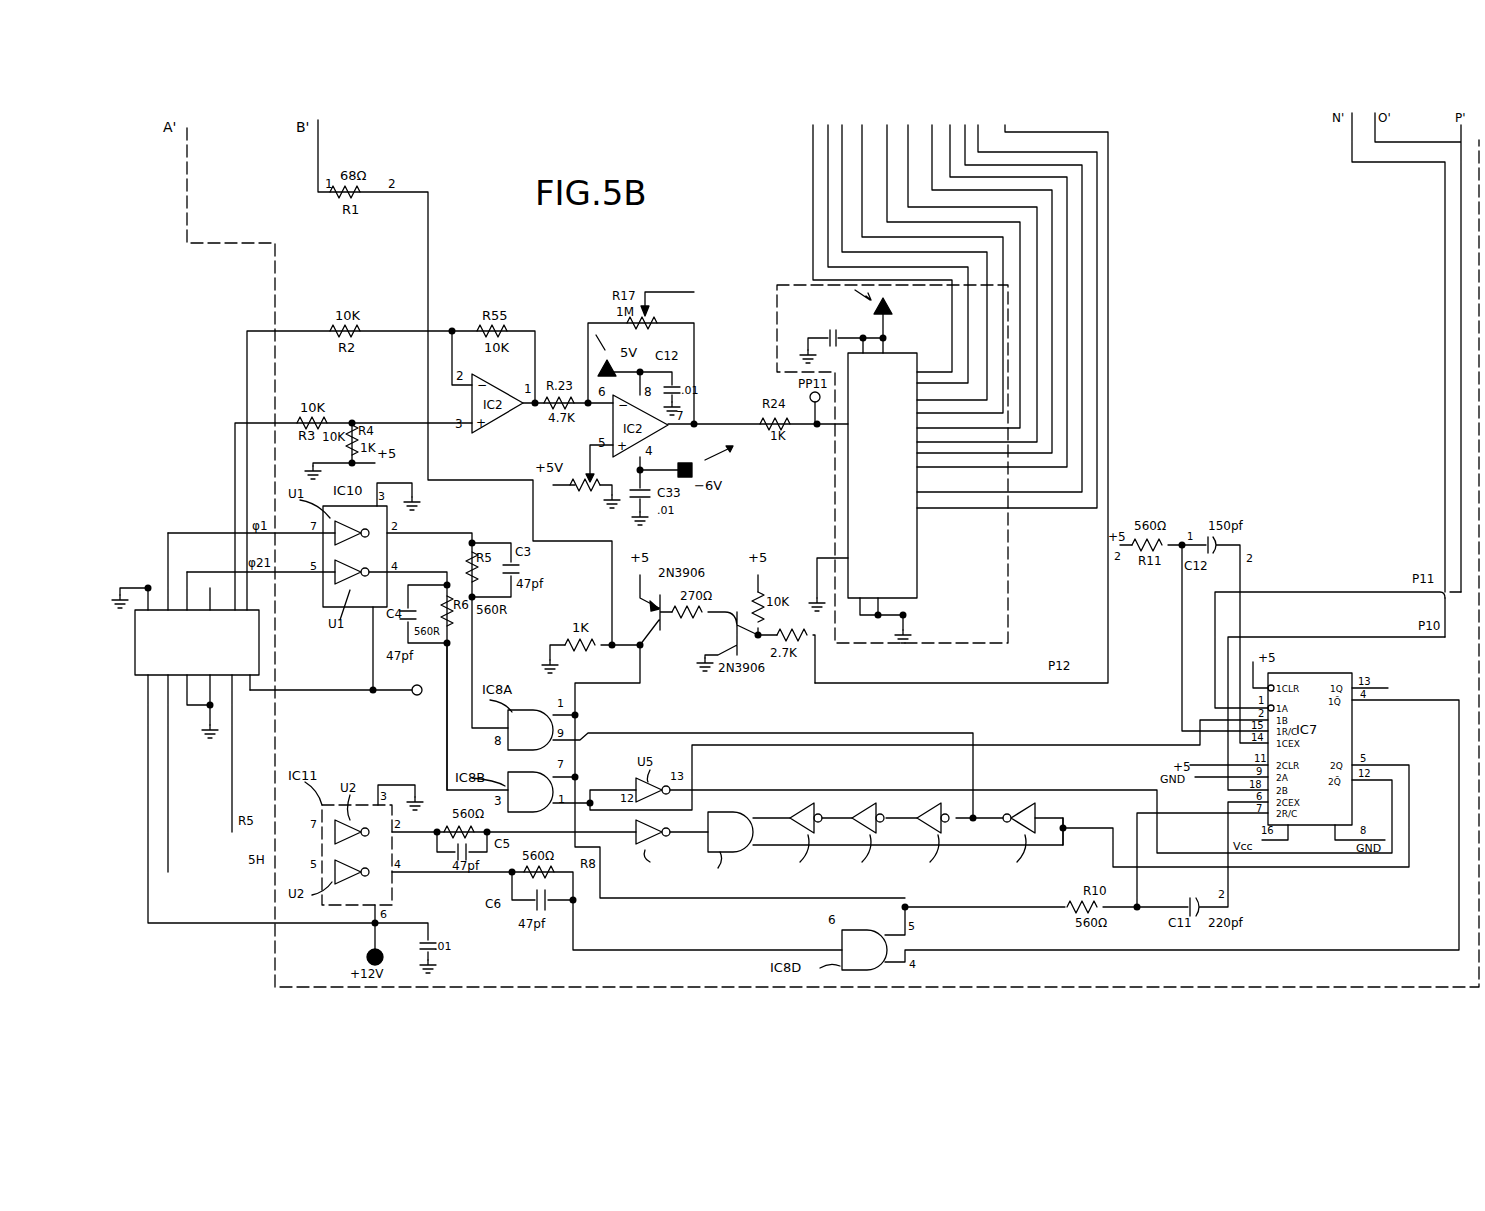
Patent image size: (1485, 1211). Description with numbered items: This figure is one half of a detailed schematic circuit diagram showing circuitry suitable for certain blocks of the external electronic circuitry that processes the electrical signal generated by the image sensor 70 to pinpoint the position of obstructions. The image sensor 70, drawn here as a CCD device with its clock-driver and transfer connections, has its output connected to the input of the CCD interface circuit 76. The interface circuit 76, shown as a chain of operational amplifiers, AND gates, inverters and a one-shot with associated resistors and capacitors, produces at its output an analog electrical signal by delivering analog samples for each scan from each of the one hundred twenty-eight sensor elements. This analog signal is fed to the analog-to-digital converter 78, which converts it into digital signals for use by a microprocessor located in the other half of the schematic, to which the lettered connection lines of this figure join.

The image sensor 70 is at (140, 678).
The CCD interface circuit 76 is at (797, 773).
The analog-to-digital converter 78 is at (1008, 586).